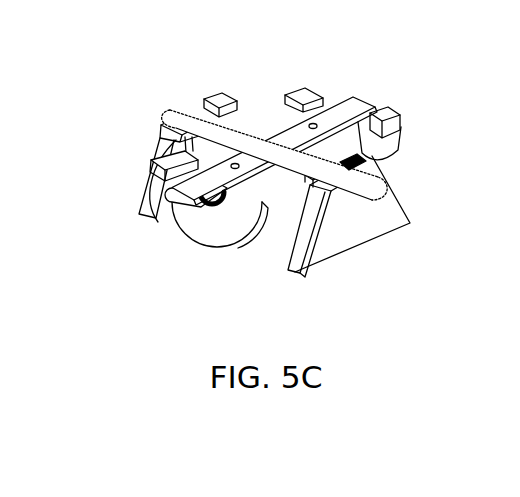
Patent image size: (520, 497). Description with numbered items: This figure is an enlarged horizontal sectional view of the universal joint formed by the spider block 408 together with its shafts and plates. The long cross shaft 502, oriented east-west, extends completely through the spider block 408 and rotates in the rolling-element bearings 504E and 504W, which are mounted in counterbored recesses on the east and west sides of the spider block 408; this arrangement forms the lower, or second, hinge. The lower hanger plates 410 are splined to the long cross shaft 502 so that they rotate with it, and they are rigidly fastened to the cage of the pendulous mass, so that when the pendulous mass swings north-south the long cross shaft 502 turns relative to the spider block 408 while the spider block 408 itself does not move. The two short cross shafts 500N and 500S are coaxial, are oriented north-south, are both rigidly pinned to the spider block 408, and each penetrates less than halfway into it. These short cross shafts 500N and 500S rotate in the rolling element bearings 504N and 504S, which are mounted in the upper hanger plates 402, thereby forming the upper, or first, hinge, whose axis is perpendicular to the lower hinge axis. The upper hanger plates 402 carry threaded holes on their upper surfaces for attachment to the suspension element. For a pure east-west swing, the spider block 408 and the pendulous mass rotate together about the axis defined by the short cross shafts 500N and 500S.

The upper hanger plate 402 is at (390, 129).
The spider block 408 is at (267, 110).
The lower hanger plate 410 is at (133, 207).
The short cross shaft 500N is at (356, 100).
The short cross shaft 500S is at (185, 198).
The long cross shaft 502 is at (370, 197).
The rolling-element bearing 504E is at (367, 162).
The rolling element bearing 504N is at (320, 107).
The rolling element bearing 504S is at (183, 177).
The rolling-element bearing 504W is at (233, 108).